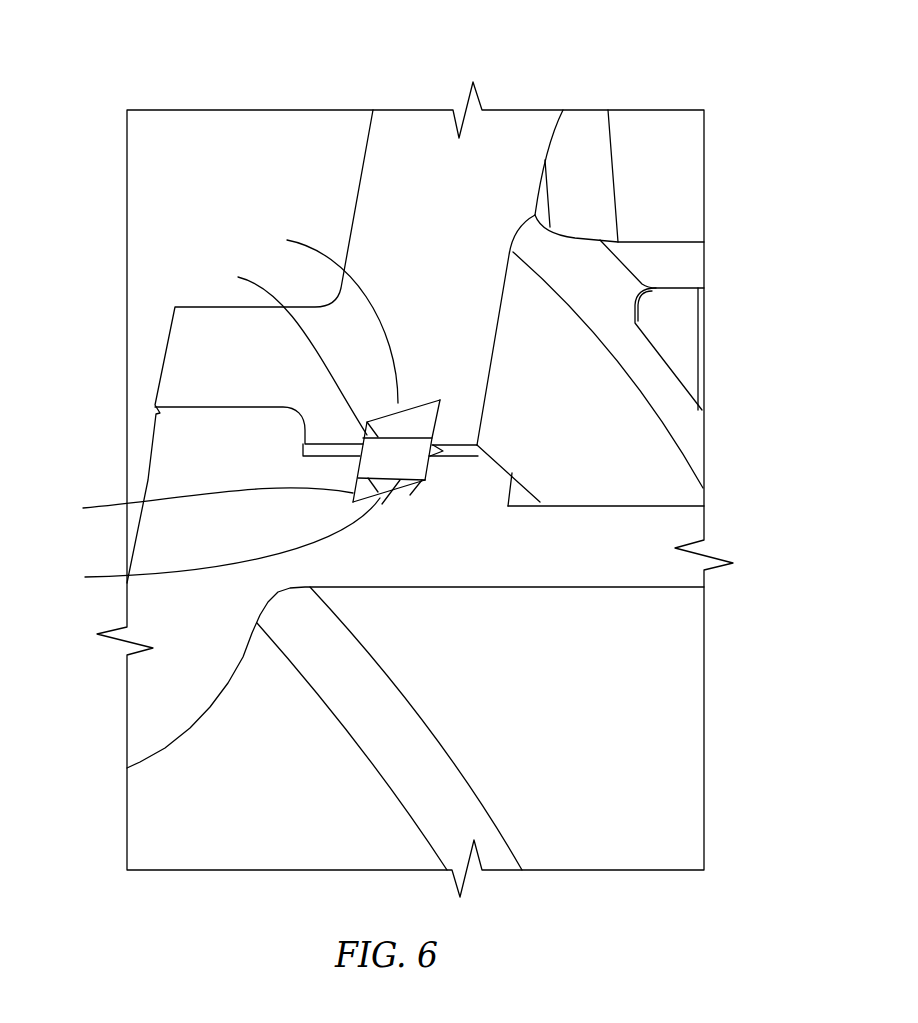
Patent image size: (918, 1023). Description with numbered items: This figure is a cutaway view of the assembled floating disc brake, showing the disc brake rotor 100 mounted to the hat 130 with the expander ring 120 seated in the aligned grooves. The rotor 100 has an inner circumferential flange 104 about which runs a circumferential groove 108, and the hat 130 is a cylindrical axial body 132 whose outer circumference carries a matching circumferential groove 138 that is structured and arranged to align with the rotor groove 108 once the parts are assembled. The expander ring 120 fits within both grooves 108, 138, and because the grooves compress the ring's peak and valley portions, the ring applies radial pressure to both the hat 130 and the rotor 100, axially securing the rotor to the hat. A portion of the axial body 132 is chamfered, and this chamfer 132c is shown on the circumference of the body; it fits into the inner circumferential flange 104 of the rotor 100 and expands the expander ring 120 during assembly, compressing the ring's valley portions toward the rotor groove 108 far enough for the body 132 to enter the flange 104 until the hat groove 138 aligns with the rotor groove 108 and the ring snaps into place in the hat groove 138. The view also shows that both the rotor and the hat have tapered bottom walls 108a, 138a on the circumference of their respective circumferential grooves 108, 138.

The disc brake rotor 100 is at (147, 42).
The inner circumferential flange 104 is at (597, 412).
The circumferential groove 108 is at (250, 346).
The tapered bottom wall 108a is at (314, 315).
The expander ring 120 is at (392, 465).
The hat 130 is at (587, 710).
The cylindrical axial body 132 is at (590, 540).
The chamfer 132c is at (505, 465).
The circumferential groove 138 is at (199, 505).
The tapered bottom wall 138a is at (207, 544).